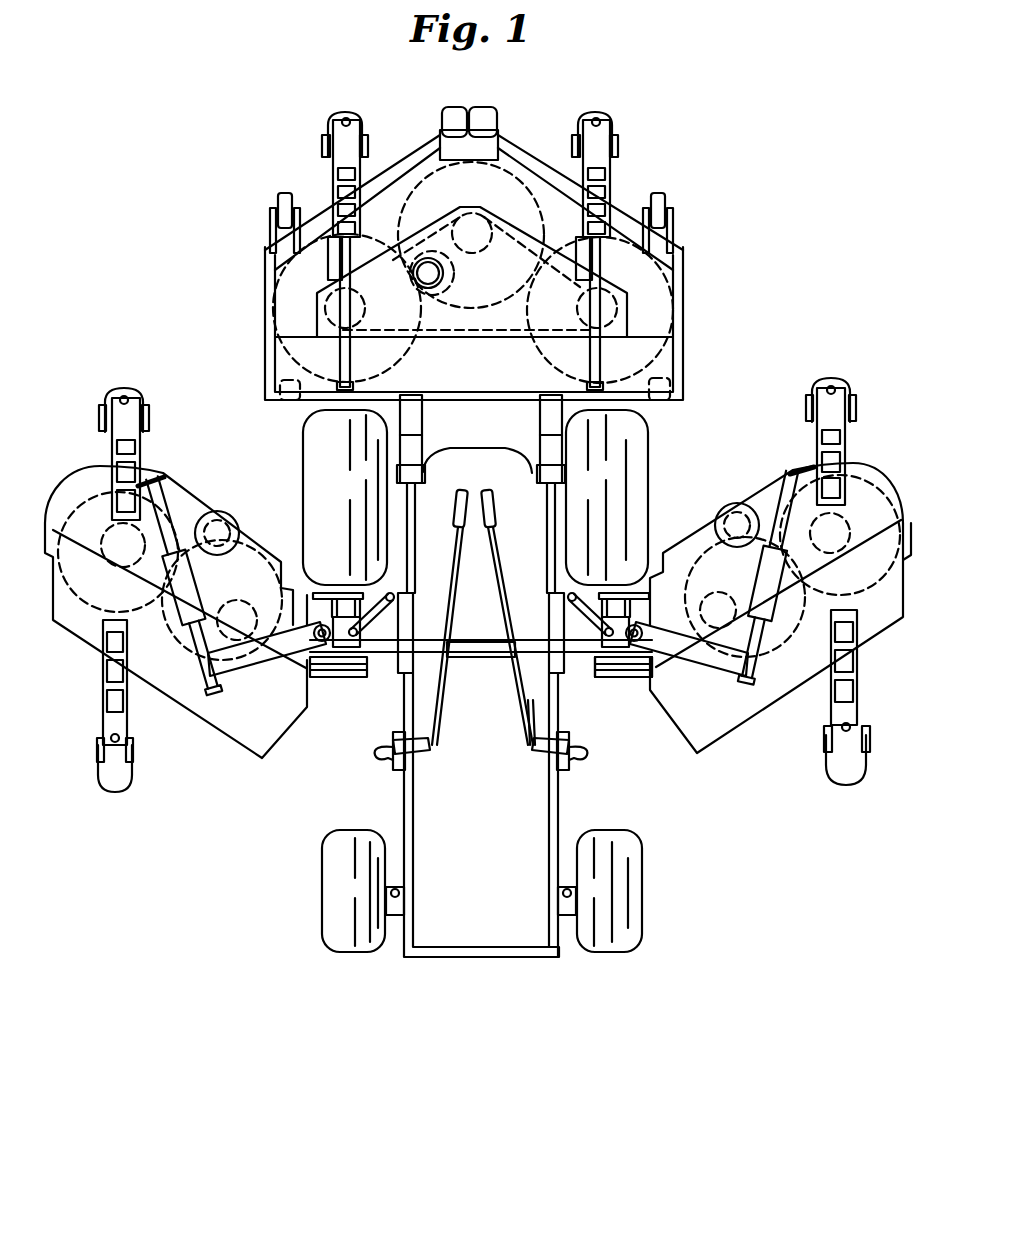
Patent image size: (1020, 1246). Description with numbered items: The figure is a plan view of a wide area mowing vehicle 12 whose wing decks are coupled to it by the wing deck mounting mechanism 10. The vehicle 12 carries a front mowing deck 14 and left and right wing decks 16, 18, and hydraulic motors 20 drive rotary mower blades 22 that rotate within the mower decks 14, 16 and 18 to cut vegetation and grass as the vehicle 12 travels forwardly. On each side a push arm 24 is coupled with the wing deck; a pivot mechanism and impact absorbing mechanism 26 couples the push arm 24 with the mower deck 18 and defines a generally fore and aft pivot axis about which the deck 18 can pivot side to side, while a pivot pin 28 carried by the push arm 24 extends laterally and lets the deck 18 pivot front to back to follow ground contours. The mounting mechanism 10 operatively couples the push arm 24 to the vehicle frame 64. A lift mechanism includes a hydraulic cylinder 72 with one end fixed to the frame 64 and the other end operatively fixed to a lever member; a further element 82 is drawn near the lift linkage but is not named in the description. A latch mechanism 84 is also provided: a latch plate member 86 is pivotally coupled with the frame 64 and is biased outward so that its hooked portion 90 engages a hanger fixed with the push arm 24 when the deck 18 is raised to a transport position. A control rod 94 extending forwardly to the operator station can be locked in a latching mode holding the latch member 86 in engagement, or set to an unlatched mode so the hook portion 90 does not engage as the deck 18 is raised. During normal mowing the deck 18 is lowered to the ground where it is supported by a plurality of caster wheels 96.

The wing deck mounting mechanism 10 is at (602, 676).
The vehicle 12 is at (462, 957).
The front mowing deck 14 is at (523, 145).
The left wing deck 16 is at (75, 488).
The right wing deck 18 is at (870, 474).
The hydraulic motor 20 is at (219, 518).
The rotary mower blade 22 is at (165, 612).
The push arm 24 is at (728, 670).
The pivot mechanism and impact absorbing mechanism 26 is at (796, 472).
The pivot pin 28 is at (818, 575).
The vehicle frame 64 is at (560, 806).
The hydraulic cylinder 72 is at (498, 660).
The link 82 is at (578, 592).
The latch mechanism 84 is at (532, 746).
The latch plate member 86 is at (572, 738).
The hooked portion 90 is at (586, 754).
The control rod 94 is at (498, 546).
The caster wheel 96 is at (122, 388).